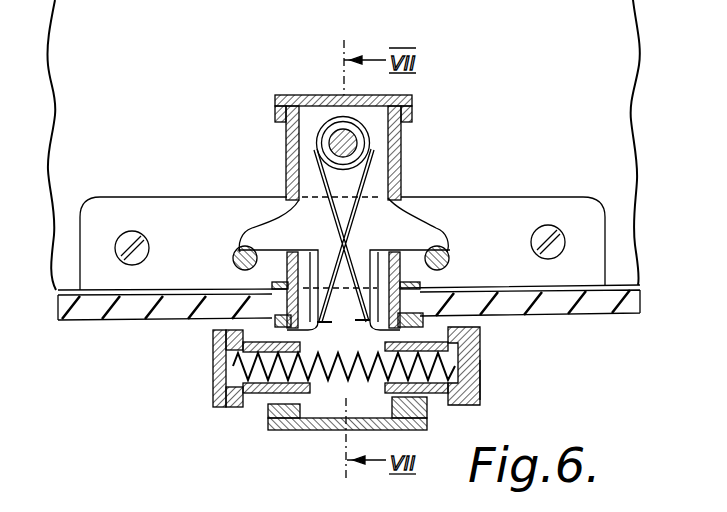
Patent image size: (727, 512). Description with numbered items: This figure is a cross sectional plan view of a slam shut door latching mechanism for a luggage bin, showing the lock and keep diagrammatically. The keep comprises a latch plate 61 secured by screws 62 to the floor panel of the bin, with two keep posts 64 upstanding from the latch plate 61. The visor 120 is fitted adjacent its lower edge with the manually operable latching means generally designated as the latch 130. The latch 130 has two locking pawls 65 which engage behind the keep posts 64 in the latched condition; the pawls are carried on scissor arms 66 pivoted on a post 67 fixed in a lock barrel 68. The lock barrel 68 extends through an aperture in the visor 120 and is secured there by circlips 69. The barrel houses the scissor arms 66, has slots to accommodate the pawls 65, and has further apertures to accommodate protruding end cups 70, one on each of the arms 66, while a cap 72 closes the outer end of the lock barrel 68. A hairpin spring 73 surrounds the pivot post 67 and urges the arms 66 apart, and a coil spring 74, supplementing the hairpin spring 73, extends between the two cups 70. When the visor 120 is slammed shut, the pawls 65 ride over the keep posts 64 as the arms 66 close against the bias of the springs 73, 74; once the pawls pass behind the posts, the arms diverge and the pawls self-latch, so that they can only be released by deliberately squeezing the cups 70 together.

The latch plate 61 is at (595, 237).
The screws 62 is at (548, 226).
The keep posts 64 is at (448, 254).
The locking pawls 65 is at (273, 220).
The scissor arms 66 is at (300, 250).
The post 67 is at (328, 137).
The lock barrel 68 is at (402, 140).
The circlips 69 is at (272, 284).
The end cups 70 is at (215, 377).
The cap 72 is at (277, 420).
The hairpin spring 73 is at (393, 197).
The coil spring 74 is at (257, 407).
The visor 120 is at (618, 303).
The latch 130 is at (487, 391).